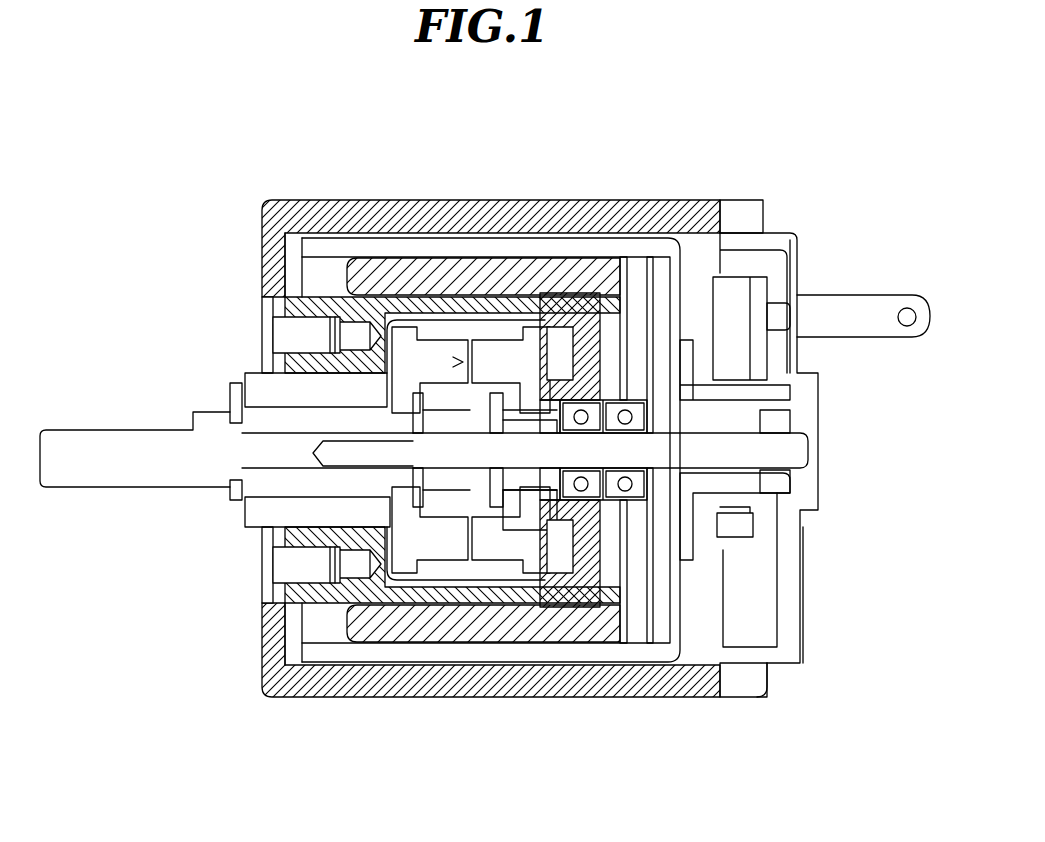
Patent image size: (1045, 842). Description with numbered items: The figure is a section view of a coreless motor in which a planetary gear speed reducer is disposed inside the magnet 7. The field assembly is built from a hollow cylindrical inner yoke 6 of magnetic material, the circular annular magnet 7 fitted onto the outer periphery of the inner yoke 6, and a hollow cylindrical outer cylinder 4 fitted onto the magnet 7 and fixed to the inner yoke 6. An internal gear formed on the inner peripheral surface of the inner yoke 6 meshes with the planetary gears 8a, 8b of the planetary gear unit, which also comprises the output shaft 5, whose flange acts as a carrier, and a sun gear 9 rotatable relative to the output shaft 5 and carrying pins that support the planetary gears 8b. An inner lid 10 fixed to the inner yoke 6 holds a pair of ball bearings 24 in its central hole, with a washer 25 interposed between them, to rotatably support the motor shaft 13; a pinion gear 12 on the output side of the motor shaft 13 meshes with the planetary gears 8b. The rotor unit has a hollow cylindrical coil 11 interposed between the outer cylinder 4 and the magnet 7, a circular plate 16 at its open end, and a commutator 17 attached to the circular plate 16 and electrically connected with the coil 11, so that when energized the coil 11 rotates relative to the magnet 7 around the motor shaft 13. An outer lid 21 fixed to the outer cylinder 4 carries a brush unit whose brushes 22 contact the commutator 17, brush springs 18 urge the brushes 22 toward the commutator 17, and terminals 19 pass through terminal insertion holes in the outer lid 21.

The outer cylinder 4 is at (300, 218).
The output shaft 5 is at (118, 438).
The inner yoke 6 is at (340, 597).
The magnet 7 is at (383, 633).
The planetary gears 8a is at (443, 573).
The planetary gears 8b is at (517, 573).
The sun gear 9 is at (527, 537).
The inner lid 10 is at (603, 543).
The coil 11 is at (388, 245).
The pinion gear 12 is at (527, 425).
The motor shaft 13 is at (593, 437).
The circular plate 16 is at (677, 393).
The commutator 17 is at (745, 413).
The brush springs 18 is at (737, 285).
The terminals 19 is at (878, 332).
The outer lid 21 is at (792, 563).
The brushes 22 is at (760, 503).
The ball bearings 24 is at (578, 400).
The washer 25 is at (613, 398).